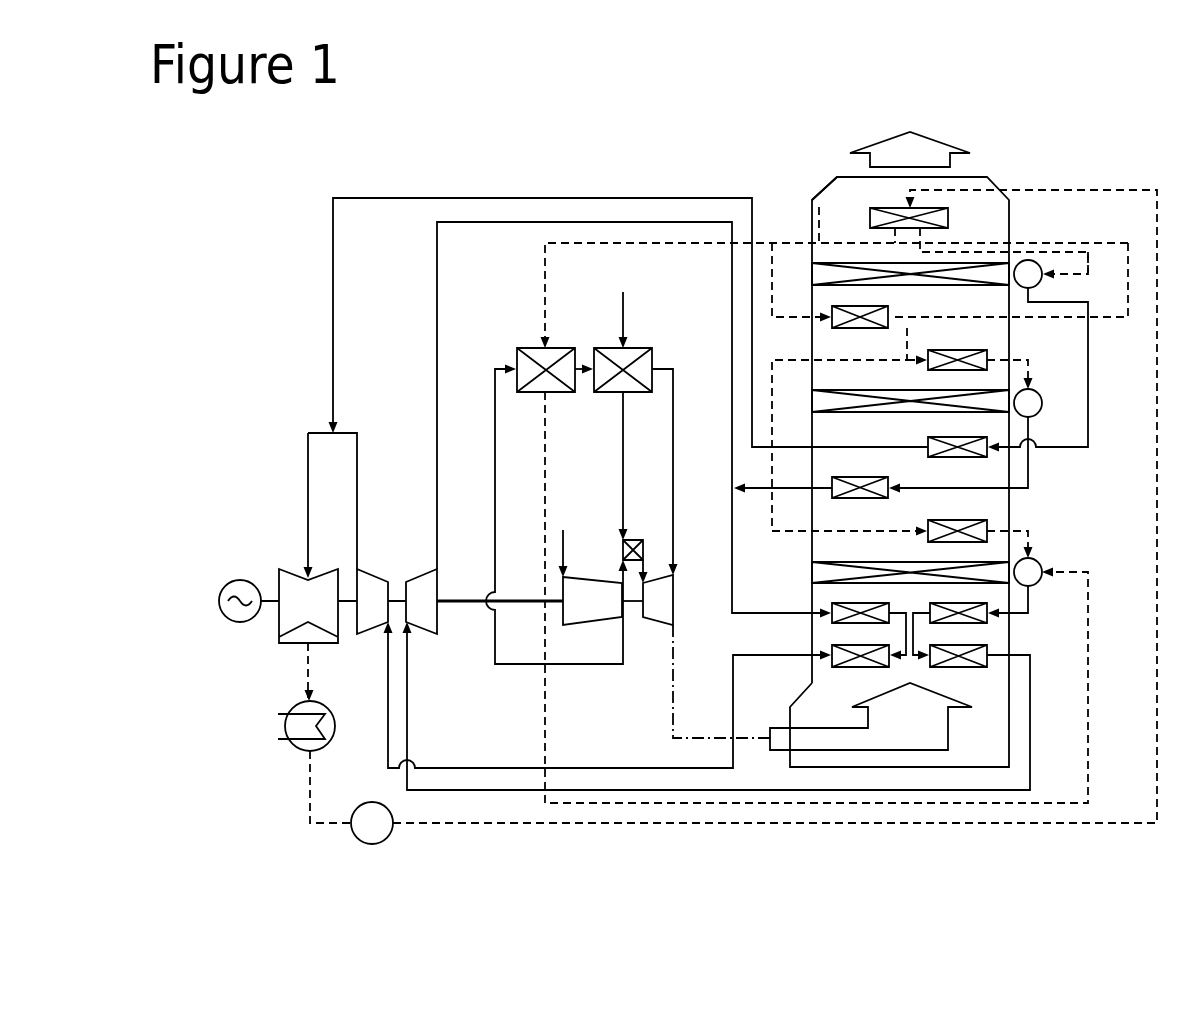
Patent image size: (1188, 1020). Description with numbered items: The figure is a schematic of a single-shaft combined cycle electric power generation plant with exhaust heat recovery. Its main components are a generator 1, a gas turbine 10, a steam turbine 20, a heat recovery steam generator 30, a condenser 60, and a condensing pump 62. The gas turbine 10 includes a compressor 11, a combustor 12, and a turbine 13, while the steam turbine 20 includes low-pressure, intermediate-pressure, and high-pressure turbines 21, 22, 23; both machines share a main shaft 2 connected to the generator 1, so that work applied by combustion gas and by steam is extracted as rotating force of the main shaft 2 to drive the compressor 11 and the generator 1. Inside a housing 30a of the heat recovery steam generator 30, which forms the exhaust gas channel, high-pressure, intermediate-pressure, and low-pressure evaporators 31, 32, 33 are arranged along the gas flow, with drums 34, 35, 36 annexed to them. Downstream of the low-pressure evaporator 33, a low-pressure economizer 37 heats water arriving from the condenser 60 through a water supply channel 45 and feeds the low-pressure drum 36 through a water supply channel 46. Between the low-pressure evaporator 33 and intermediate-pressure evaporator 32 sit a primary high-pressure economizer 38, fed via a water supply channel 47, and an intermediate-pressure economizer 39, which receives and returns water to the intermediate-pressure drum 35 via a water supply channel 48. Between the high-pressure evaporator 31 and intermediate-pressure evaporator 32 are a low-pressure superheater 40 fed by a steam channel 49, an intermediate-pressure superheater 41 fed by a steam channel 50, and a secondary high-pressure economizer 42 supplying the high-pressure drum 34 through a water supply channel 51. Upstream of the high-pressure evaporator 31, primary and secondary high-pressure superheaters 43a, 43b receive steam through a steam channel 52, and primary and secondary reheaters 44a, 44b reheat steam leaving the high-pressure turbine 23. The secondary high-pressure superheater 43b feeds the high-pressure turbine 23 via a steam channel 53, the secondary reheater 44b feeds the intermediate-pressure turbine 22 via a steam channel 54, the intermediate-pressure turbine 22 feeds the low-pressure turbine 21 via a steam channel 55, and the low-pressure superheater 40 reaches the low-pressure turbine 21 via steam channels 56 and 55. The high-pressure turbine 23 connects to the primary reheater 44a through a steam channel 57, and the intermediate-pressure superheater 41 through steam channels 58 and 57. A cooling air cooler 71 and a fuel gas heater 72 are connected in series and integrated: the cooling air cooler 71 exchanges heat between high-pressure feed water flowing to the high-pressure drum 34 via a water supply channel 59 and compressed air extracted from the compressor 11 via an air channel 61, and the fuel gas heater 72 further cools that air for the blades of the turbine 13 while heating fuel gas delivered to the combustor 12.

The generator 1 is at (240, 580).
The main shaft 2 is at (463, 600).
The gas turbine 10 is at (633, 673).
The compressor 11 is at (595, 576).
The combustor 12 is at (638, 537).
The turbine 13 is at (643, 623).
The steam turbine 20 is at (395, 498).
The low-pressure turbine 21 is at (292, 568).
The intermediate-pressure turbine 22 is at (374, 568).
The high-pressure turbine 23 is at (414, 576).
The heat recovery steam generator 30 is at (1006, 171).
The housing 30a is at (822, 187).
The high-pressure evaporator 31 is at (888, 562).
The intermediate-pressure evaporator 32 is at (862, 413).
The low-pressure evaporator 33 is at (938, 287).
The high-pressure drum 34 is at (1040, 559).
The intermediate-pressure drum 35 is at (1042, 415).
The low-pressure drum 36 is at (1024, 290).
The low-pressure economizer 37 is at (880, 208).
The primary high-pressure economizer 38 is at (874, 306).
The intermediate-pressure economizer 39 is at (970, 350).
The low-pressure superheater 40 is at (957, 437).
The intermediate-pressure superheater 41 is at (860, 477).
The secondary high-pressure economizer 42 is at (967, 520).
The primary high-pressure superheater 43a is at (978, 601).
The secondary high-pressure superheater 43b is at (977, 667).
The primary reheater 44a is at (848, 602).
The secondary reheater 44b is at (845, 667).
The water supply channel 45 is at (1128, 190).
The water supply channel 46 is at (1088, 267).
The water supply channel 47 is at (812, 205).
The water supply channel 48 is at (962, 243).
The steam channel 49 is at (1088, 378).
The steam channel 50 is at (970, 488).
The water supply channel 51 is at (868, 527).
The steam channel 52 is at (1023, 616).
The steam channel 53 is at (753, 790).
The steam channel 54 is at (641, 768).
The steam channel 55 is at (308, 456).
The steam channel 56 is at (520, 199).
The steam channel 57 is at (737, 534).
The steam channel 58 is at (788, 488).
The water supply channel 59 is at (712, 244).
The condenser 60 is at (328, 708).
The air channel 61 is at (512, 664).
The condensing pump 62 is at (372, 802).
The cooling air cooler 71 is at (523, 348).
The fuel gas heater 72 is at (640, 348).